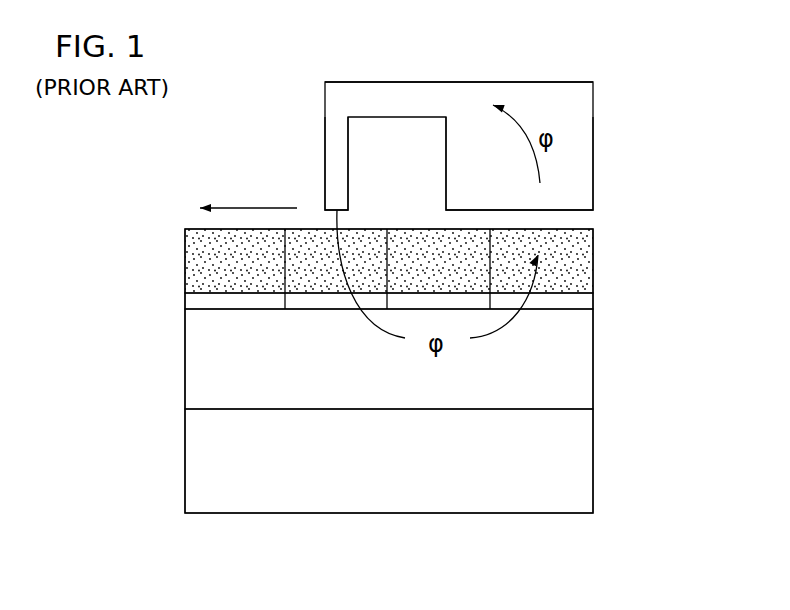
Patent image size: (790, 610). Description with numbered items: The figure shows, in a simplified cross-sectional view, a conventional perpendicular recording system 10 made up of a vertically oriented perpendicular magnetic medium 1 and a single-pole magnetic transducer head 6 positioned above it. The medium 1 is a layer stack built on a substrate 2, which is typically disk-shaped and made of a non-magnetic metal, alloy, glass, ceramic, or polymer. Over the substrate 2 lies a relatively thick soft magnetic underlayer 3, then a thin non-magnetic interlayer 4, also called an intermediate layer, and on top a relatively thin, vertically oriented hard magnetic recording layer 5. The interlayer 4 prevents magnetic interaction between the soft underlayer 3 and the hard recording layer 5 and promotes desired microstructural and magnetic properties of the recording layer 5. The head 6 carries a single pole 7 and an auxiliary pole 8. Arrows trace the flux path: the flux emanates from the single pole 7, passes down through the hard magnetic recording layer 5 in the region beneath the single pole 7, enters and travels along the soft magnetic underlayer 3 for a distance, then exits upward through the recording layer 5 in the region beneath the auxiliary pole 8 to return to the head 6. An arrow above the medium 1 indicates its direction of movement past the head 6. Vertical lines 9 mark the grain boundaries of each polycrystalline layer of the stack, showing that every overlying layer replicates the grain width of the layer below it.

The perpendicular magnetic medium 1 is at (168, 288).
The substrate 2 is at (594, 457).
The soft magnetic underlayer 3 is at (594, 360).
The non-magnetic interlayer 4 is at (594, 303).
The hard magnetic recording layer 5 is at (594, 258).
The single-pole magnetic transducer head 6 is at (383, 80).
The single pole 7 is at (325, 158).
The auxiliary pole 8 is at (593, 142).
The grain boundaries 9 is at (285, 310).
The perpendicular recording system 10 is at (597, 60).